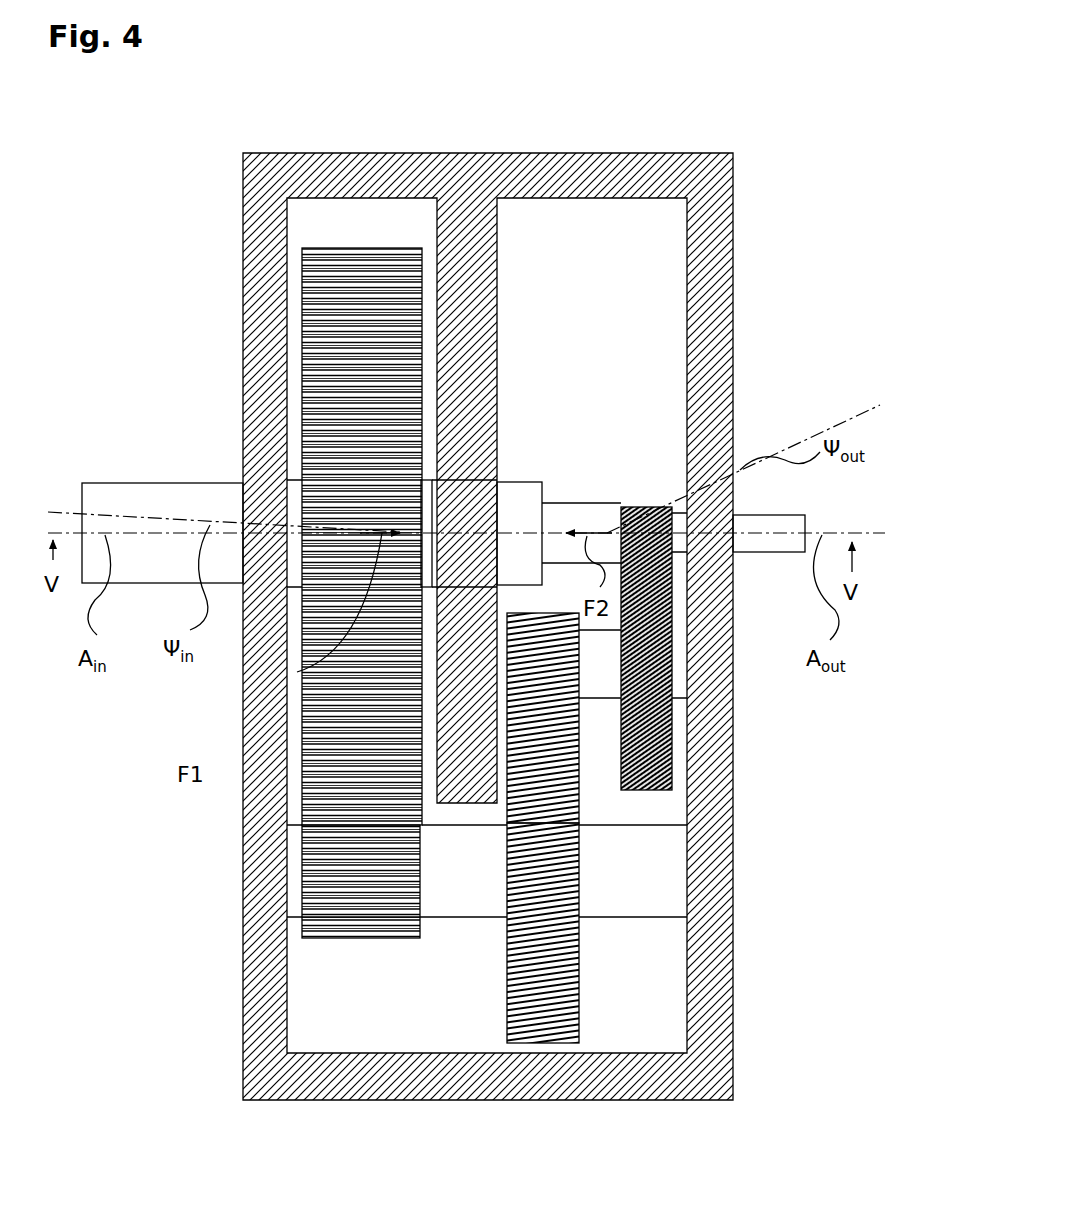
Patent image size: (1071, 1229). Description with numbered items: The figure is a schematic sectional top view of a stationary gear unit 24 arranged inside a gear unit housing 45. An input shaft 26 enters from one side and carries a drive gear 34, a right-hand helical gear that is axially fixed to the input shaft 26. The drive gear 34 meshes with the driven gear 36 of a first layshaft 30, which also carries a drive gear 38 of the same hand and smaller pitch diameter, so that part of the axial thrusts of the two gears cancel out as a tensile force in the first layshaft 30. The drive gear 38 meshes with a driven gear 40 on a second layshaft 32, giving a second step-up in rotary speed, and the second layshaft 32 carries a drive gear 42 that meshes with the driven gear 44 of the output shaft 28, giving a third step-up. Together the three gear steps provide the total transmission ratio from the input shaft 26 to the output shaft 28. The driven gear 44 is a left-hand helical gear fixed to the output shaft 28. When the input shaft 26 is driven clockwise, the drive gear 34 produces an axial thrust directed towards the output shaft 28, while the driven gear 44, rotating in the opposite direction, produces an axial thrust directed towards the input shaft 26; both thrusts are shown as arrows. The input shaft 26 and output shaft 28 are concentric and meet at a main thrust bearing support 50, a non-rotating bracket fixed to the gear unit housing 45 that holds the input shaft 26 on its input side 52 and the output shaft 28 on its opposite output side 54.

The gear unit 24 is at (718, 58).
The input shaft 26 is at (150, 483).
The output shaft 28 is at (590, 510).
The first layshaft 30 is at (458, 900).
The second layshaft 32 is at (591, 690).
The drive gear of the input shaft 34 is at (313, 333).
The driven gear of the first layshaft 36 is at (355, 920).
The drive gear of the first layshaft 38 is at (558, 980).
The driven gear of the second layshaft 40 is at (550, 628).
The drive gear of the second layshaft 42 is at (665, 748).
The driven gear of the output shaft 44 is at (637, 507).
The gear unit housing 45 is at (443, 175).
The main thrust bearing support 50 is at (507, 505).
The input side 52 is at (428, 475).
The output side 54 is at (547, 485).